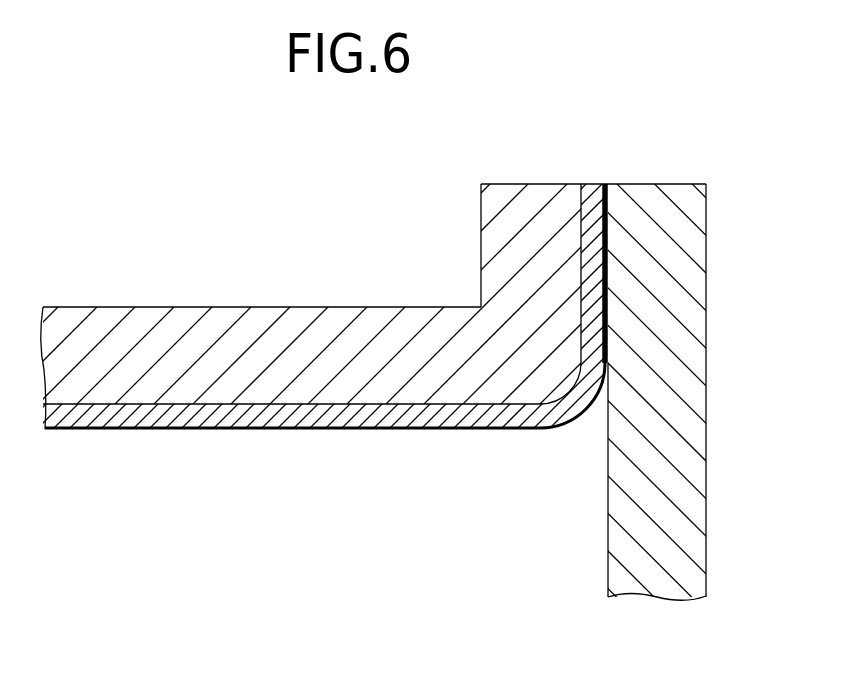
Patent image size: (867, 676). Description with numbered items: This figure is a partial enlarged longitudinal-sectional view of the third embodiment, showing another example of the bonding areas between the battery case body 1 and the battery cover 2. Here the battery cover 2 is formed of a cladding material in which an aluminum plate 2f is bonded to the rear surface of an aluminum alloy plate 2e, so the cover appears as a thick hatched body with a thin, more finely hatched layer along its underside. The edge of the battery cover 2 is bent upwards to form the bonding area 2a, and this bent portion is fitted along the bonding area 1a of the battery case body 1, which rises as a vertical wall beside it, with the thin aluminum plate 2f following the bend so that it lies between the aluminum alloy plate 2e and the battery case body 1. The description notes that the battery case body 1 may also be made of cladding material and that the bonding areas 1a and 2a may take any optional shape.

The battery case body 1 is at (735, 443).
The bonding area of the battery case body 1a is at (697, 281).
The battery cover 2 is at (253, 296).
The bonding area of the battery cover 2a is at (490, 210).
The aluminum alloy plate 2e is at (530, 195).
The aluminum plate 2f is at (592, 195).